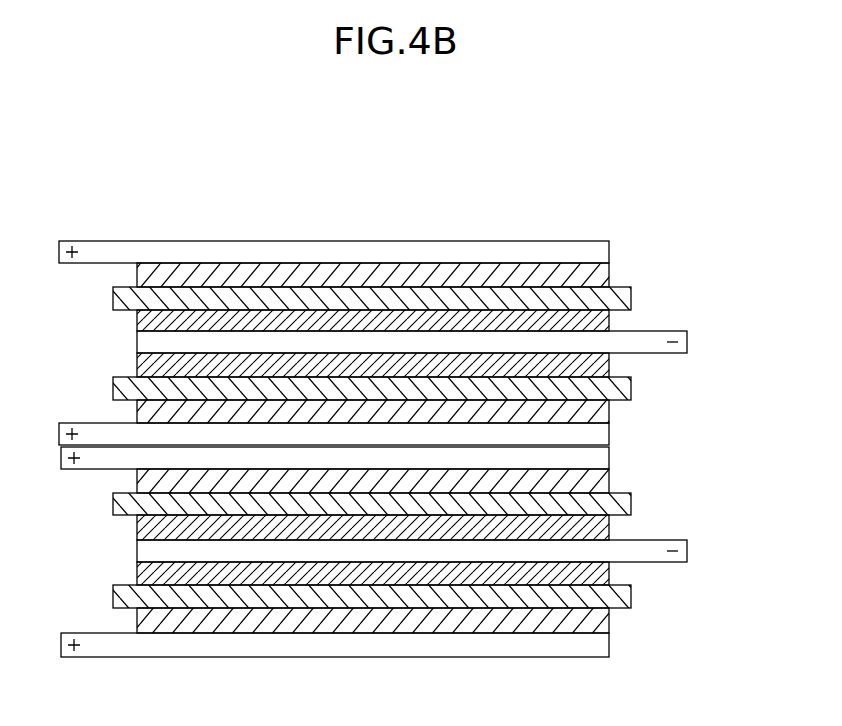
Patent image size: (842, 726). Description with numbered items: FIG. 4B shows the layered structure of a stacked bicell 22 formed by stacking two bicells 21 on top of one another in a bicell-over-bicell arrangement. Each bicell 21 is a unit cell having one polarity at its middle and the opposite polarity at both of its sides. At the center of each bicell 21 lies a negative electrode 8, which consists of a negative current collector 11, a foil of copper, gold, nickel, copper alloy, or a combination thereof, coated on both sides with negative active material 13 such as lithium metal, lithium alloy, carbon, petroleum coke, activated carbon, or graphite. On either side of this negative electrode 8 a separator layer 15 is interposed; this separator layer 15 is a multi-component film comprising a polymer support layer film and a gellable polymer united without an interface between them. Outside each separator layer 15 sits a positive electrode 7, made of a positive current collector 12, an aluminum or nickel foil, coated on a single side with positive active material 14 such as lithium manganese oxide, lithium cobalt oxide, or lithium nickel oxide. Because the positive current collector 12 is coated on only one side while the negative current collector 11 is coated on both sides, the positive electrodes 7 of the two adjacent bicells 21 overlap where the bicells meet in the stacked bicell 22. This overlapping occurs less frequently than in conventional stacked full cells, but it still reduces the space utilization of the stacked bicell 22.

The positive electrode 7 is at (389, 445).
The negative electrode 8 is at (461, 449).
The negative current collector 11 is at (688, 344).
The positive current collector 12 is at (604, 250).
The negative active material 13 is at (608, 318).
The positive active material 14 is at (600, 275).
The separator layer 15 is at (118, 297).
The bicell 21 is at (395, 445).
The stacked bicell 22 is at (396, 445).